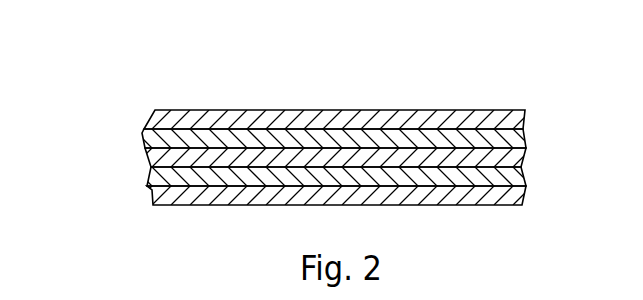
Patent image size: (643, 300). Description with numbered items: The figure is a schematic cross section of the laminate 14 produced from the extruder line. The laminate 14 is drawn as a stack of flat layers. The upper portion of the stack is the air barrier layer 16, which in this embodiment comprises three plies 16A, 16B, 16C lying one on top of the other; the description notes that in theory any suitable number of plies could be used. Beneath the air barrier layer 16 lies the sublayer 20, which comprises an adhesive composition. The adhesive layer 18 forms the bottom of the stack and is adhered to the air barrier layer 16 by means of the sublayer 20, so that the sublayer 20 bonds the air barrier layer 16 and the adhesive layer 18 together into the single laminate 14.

The laminate 14 is at (484, 82).
The air barrier layer 16 is at (315, 150).
The ply 16A is at (150, 114).
The ply 16B is at (146, 140).
The ply 16C is at (148, 158).
The sublayer 20 is at (527, 178).
The adhesive layer 18 is at (523, 198).